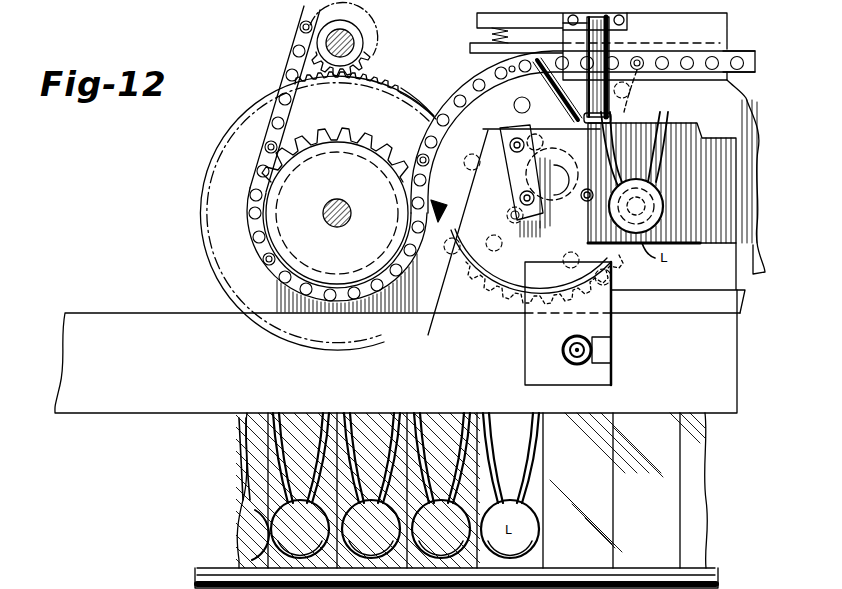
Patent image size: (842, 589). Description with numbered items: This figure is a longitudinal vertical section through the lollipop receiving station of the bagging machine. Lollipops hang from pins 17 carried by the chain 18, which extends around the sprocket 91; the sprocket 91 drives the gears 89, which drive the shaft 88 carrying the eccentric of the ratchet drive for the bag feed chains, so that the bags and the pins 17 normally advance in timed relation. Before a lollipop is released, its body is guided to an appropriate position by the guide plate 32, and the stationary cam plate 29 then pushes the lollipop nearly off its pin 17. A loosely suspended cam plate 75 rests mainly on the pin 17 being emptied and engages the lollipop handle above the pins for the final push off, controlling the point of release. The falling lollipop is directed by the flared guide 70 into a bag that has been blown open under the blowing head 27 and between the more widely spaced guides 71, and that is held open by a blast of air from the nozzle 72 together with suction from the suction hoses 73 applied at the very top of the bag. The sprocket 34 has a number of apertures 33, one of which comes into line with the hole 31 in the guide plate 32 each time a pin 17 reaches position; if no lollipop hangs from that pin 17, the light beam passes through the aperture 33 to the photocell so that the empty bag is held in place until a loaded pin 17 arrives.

The pin 17 is at (266, 154).
The chain 18 is at (287, 89).
The blowing head 27 is at (742, 282).
The stationary cam plate 29 is at (733, 83).
The hole 31 is at (622, 220).
The guide plate 32 is at (700, 243).
The aperture 33 is at (530, 106).
The sprocket 34 is at (470, 277).
The flared guide 70 is at (603, 304).
The guide 71 is at (733, 367).
The nozzle 72 is at (610, 36).
The suction hose 73 is at (562, 350).
The cam plate 75 is at (737, 50).
The shaft 88 is at (352, 49).
The gear 89 is at (362, 65).
The sprocket 91 is at (397, 118).